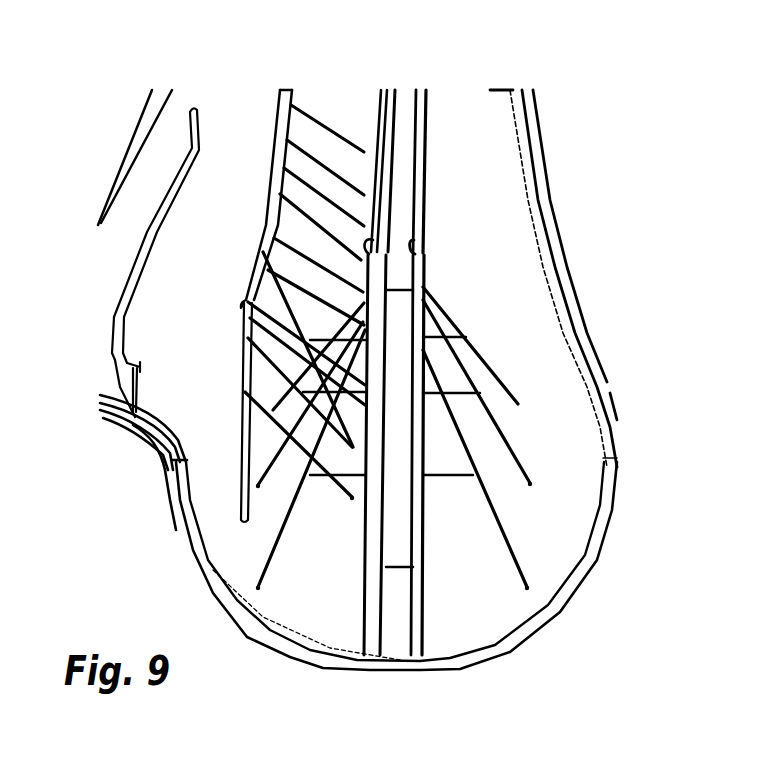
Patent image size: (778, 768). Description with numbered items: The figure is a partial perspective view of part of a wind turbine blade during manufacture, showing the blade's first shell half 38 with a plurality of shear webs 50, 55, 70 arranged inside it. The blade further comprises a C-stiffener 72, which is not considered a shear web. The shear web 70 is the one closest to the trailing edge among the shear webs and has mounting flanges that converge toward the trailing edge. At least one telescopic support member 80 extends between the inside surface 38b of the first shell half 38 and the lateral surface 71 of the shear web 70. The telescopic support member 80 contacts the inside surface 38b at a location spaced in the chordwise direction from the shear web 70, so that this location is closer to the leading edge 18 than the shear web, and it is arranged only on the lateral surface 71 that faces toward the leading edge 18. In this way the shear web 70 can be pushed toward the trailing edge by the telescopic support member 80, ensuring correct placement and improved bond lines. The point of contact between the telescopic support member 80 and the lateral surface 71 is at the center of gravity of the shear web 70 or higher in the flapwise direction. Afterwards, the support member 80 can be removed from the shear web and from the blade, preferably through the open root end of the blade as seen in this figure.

The leading edge 18 is at (613, 437).
The first shell half 38 is at (193, 540).
The inside surface 38b is at (220, 268).
The shear web 50 is at (427, 97).
The shear web 55 is at (380, 123).
The shear web 70 is at (277, 127).
The lateral surface 71 is at (250, 383).
The C-stiffener 72 is at (122, 290).
The telescopic support member 80 is at (303, 447).